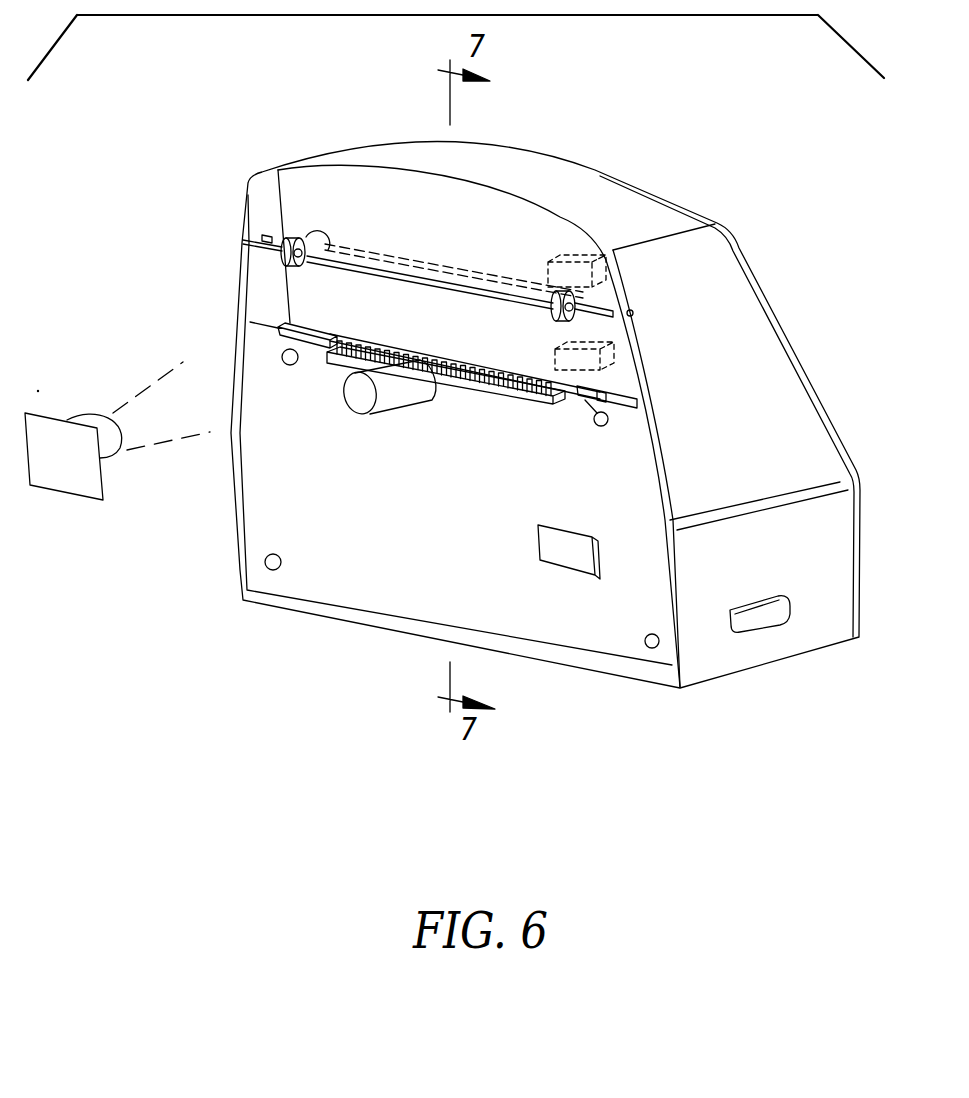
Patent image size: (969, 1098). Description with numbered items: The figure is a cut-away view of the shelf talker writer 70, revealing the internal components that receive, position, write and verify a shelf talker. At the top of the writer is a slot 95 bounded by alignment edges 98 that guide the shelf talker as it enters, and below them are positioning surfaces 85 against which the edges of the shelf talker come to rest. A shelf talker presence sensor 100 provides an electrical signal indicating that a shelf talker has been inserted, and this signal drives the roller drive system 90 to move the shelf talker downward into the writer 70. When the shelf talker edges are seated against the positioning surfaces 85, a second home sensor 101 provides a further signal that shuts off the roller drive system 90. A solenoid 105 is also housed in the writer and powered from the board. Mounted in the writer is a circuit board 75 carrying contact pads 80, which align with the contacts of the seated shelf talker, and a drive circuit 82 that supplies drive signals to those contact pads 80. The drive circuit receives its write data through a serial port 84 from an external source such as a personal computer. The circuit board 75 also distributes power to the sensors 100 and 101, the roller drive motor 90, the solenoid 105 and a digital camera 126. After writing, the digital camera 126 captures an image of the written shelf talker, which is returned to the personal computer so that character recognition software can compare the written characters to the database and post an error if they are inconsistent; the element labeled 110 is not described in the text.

The shelf talker writer 70 is at (830, 417).
The circuit board 75 is at (540, 617).
The contact pads 80 is at (506, 376).
The drive circuit 82 is at (577, 577).
The serial port 84 is at (753, 632).
The positioning surfaces 85 is at (313, 333).
The roller drive system 90 is at (282, 248).
The slot 95 is at (533, 227).
The alignment edges 98 is at (284, 213).
The shelf talker presence sensor 100 is at (577, 257).
The second home sensor 101 is at (613, 366).
The solenoid 105 is at (360, 408).
The rack base 110 is at (512, 400).
The digital camera 126 is at (92, 485).